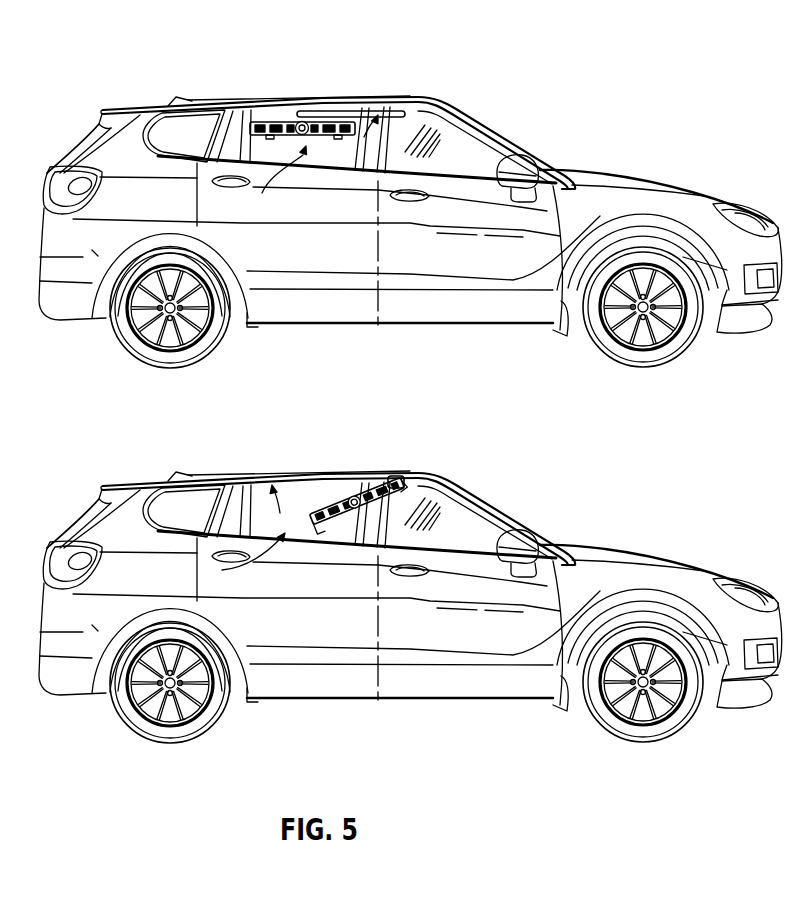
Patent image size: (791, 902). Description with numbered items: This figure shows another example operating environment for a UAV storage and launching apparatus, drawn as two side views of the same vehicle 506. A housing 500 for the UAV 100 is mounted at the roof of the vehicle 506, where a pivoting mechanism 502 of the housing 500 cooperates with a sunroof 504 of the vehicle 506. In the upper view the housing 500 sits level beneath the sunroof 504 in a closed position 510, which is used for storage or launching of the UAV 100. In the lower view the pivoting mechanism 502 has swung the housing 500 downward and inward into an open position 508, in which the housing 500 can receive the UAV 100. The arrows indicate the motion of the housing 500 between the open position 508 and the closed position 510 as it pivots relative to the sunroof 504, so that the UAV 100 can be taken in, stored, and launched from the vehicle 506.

The UAV 100 is at (283, 121).
The housing 500 is at (398, 122).
The pivoting mechanism 502 is at (410, 98).
The sunroof 504 is at (342, 93).
The vehicle 506 is at (633, 175).
The open position 508 is at (231, 562).
The closed position 510 is at (275, 187).